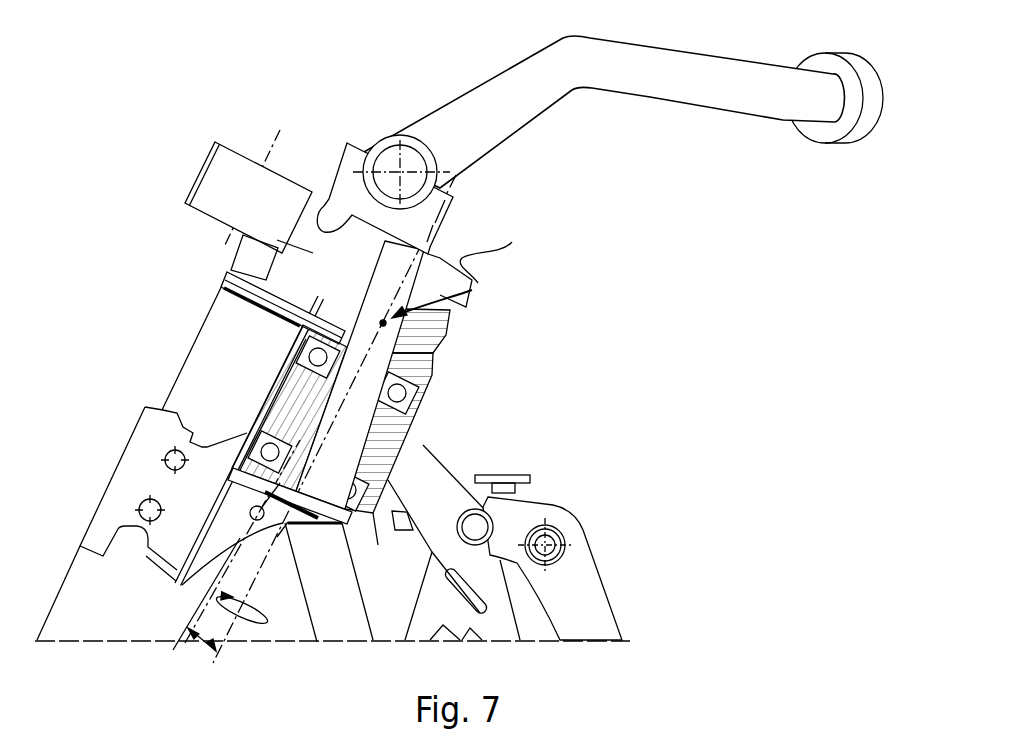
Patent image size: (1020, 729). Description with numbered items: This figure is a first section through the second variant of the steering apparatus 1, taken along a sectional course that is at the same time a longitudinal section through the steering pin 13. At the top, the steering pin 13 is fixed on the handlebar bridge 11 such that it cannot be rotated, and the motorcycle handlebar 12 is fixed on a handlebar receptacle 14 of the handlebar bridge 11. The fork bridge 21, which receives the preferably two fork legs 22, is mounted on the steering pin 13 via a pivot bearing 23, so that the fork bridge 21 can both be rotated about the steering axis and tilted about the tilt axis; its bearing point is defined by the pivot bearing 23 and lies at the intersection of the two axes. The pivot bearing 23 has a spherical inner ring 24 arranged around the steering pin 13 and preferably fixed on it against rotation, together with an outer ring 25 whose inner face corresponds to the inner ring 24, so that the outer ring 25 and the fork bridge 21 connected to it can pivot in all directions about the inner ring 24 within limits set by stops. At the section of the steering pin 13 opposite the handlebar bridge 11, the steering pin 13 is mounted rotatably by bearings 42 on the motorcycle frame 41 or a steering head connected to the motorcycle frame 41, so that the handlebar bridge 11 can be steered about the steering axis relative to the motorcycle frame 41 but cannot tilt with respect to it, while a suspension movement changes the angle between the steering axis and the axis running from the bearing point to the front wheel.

The steering apparatus 1 is at (70, 118).
The handlebar bridge 11 is at (336, 205).
The motorcycle handlebar 12 is at (681, 70).
The steering pin 13 is at (360, 415).
The handlebar receptacle 14 is at (350, 150).
The fork bridge 21 is at (227, 272).
The fork legs 22 is at (195, 385).
The pivot bearing 23 is at (480, 310).
The spherical inner ring 24 is at (410, 348).
The outer ring 25 is at (440, 337).
The motorcycle frame 41 is at (527, 590).
The bearings 42 is at (348, 510).